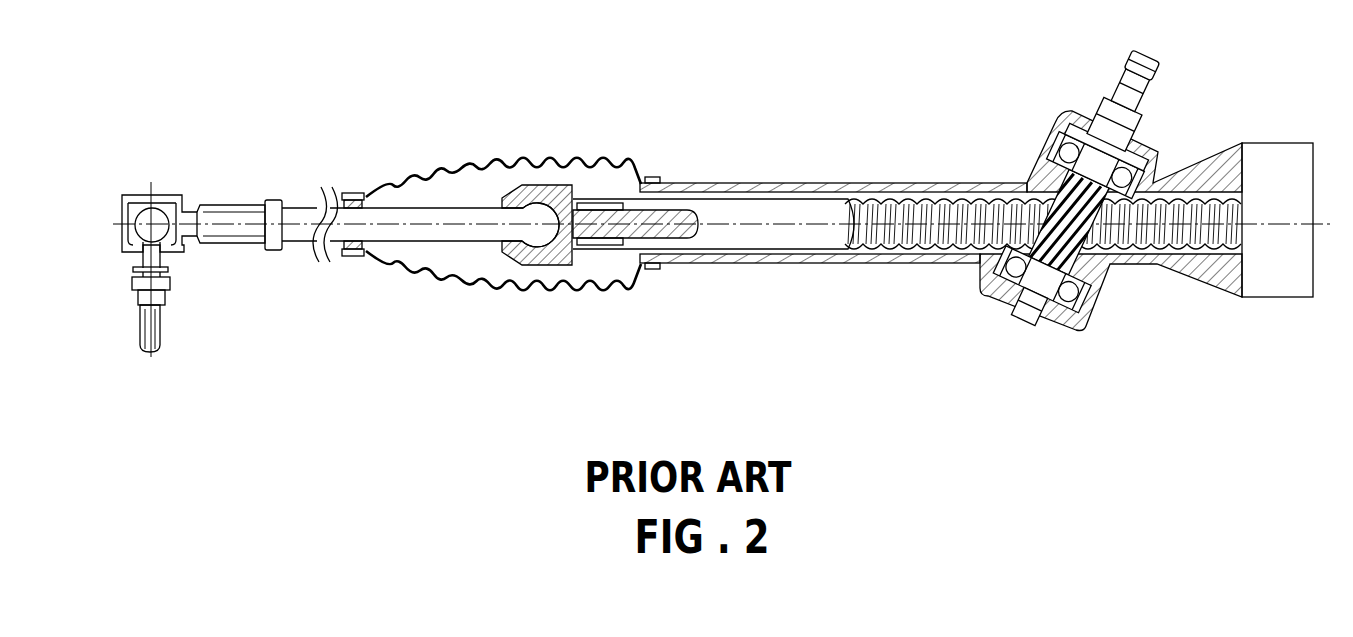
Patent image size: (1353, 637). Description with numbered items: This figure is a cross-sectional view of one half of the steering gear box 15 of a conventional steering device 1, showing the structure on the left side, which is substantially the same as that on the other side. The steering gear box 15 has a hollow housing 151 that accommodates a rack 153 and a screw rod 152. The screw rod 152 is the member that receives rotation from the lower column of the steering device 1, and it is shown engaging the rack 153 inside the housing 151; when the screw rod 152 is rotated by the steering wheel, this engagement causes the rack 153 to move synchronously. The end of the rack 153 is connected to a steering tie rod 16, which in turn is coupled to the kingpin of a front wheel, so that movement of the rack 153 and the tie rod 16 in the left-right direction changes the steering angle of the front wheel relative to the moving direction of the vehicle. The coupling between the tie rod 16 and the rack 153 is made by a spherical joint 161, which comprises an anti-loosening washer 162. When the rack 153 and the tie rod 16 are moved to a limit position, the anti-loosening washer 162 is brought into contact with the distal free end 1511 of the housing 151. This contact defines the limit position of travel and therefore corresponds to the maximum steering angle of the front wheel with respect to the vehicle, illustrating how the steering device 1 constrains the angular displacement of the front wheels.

The steering device 1 is at (198, 140).
The steering gear box 15 is at (840, 182).
The hollow housing 151 is at (757, 183).
The distal free end 1511 is at (636, 178).
The screw rod 152 is at (1117, 110).
The rack 153 is at (912, 198).
The steering tie rod 16 is at (373, 193).
The spherical joint 161 is at (523, 190).
The anti-loosening washer 162 is at (570, 183).